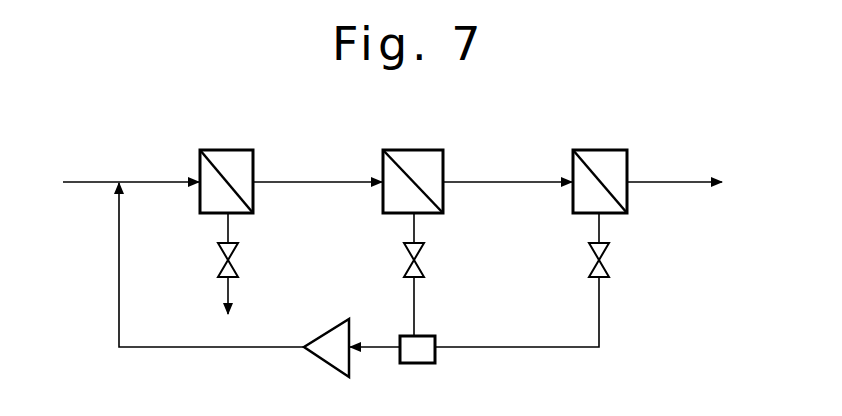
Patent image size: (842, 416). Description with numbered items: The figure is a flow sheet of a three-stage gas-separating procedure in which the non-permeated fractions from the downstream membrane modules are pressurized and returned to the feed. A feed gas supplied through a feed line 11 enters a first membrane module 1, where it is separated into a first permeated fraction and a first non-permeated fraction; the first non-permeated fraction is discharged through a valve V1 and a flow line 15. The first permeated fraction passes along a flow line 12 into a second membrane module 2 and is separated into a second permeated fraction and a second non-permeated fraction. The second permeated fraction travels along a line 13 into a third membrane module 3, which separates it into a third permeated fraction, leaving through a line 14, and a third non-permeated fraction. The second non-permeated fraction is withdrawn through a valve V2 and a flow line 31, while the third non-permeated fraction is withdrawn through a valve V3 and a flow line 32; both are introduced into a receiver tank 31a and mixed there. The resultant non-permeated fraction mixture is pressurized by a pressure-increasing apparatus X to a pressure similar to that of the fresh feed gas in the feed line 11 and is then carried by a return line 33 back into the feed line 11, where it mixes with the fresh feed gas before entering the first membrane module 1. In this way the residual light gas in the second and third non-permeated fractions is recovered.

The first membrane module 1 is at (230, 149).
The second membrane module 2 is at (425, 149).
The third membrane module 3 is at (601, 149).
The feed line 11 is at (76, 180).
The flow line 12 is at (310, 180).
The second intermediate line 13 is at (505, 180).
The product gas outlet line 14 is at (669, 180).
The flow line 15 is at (231, 290).
The flow line 31 is at (416, 305).
The receiver tank 31a is at (436, 357).
The flow line 32 is at (601, 306).
The recycle line 33 is at (168, 346).
The valve V1 is at (235, 260).
The valve V2 is at (421, 262).
The valve V3 is at (606, 262).
The pressure-increasing apparatus X is at (328, 325).